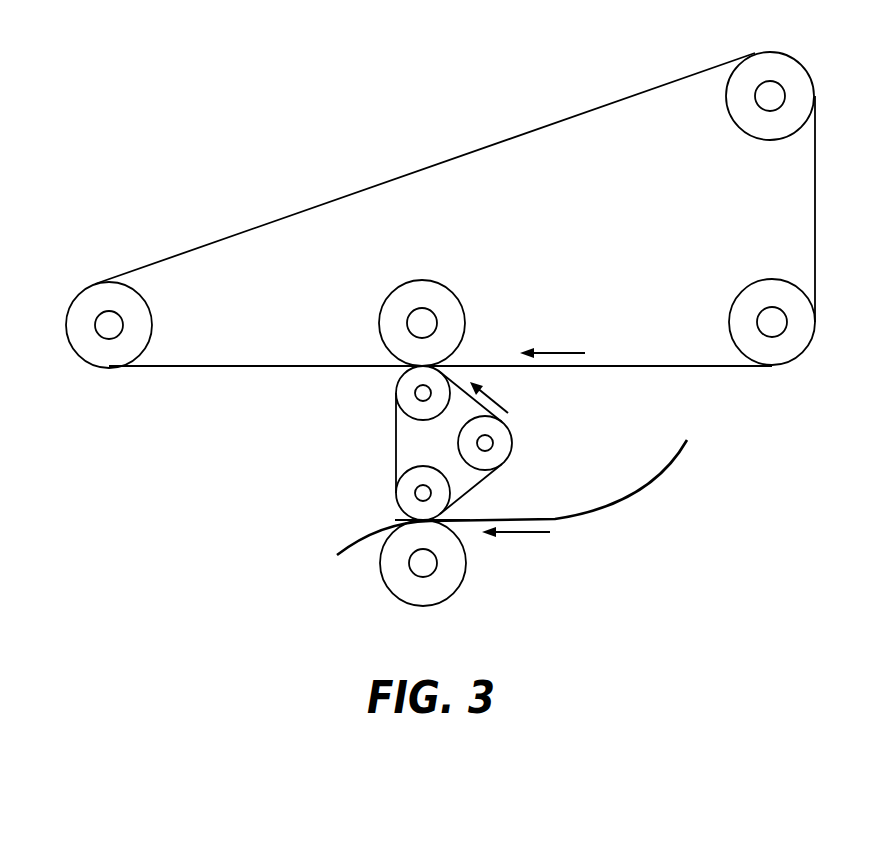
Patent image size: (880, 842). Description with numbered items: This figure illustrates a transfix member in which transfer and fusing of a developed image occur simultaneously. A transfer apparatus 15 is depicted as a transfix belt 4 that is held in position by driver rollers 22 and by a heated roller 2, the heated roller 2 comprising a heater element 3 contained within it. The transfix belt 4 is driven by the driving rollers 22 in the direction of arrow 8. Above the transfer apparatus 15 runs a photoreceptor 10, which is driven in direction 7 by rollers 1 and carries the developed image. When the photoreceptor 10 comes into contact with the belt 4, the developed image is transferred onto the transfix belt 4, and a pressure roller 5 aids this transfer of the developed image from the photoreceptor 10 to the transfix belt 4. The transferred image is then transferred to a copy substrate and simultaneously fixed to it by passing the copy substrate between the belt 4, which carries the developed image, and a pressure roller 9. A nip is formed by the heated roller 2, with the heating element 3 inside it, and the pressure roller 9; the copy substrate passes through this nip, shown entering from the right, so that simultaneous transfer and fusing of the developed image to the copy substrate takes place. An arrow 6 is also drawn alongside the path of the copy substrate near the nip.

The rollers 1 is at (752, 68).
The heated roller 2 is at (398, 517).
The heater element 3 is at (414, 492).
The transfix belt 4 is at (394, 435).
The pressure roller 5 is at (455, 299).
The web travel direction arrow 6 is at (518, 533).
The direction 7 is at (558, 352).
The arrow 8 is at (493, 400).
The pressure roller 9 is at (410, 596).
The photoreceptor 10 is at (166, 403).
The transfer apparatus 15 is at (592, 420).
The driver rollers 22 is at (402, 385).